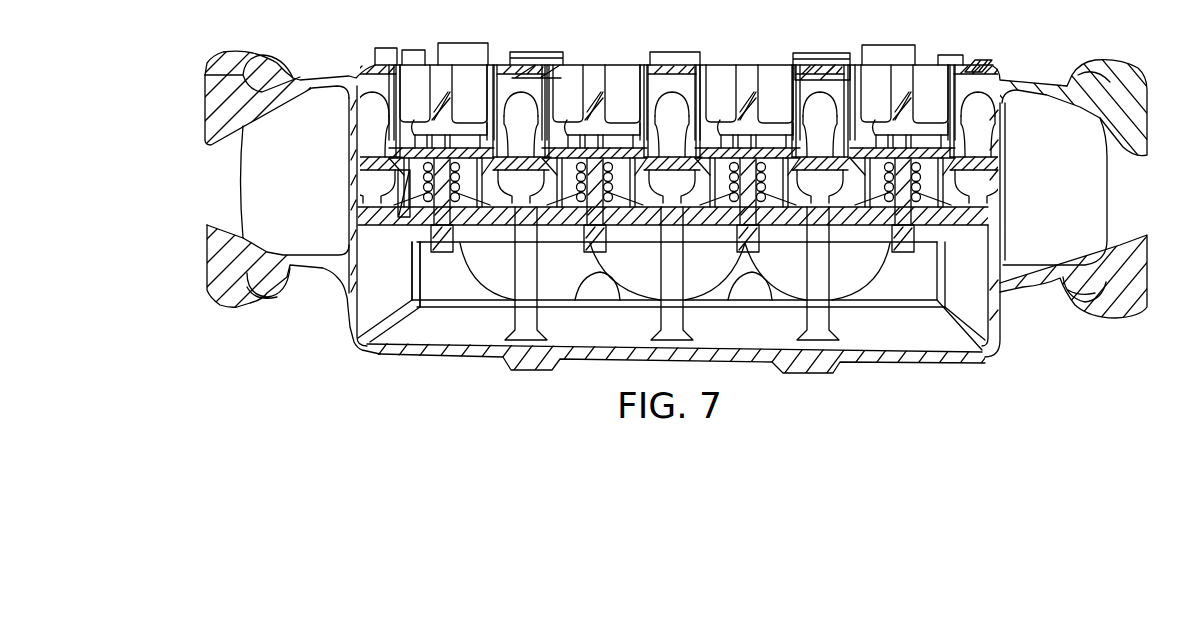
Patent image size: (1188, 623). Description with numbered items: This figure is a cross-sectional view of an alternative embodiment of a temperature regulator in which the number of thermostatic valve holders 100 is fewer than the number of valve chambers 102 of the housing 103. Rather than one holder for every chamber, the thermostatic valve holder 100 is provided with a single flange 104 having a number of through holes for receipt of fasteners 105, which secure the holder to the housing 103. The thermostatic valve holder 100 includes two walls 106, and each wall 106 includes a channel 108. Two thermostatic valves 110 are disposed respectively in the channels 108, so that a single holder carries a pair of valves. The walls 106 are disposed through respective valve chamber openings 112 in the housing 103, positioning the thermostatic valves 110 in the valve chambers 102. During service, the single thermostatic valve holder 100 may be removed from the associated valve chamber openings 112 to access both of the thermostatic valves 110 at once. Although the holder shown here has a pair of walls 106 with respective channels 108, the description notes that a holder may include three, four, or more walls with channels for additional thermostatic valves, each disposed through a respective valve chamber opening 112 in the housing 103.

The thermostatic valve holder 100 is at (990, 66).
The valve chamber 102 is at (800, 200).
The housing 103 is at (1007, 297).
The flange 104 is at (520, 72).
The fastener 105 is at (832, 53).
The wall 106 is at (349, 174).
The channel 108 is at (398, 220).
The thermostatic valve 110 is at (442, 253).
The valve chamber opening 112 is at (397, 74).